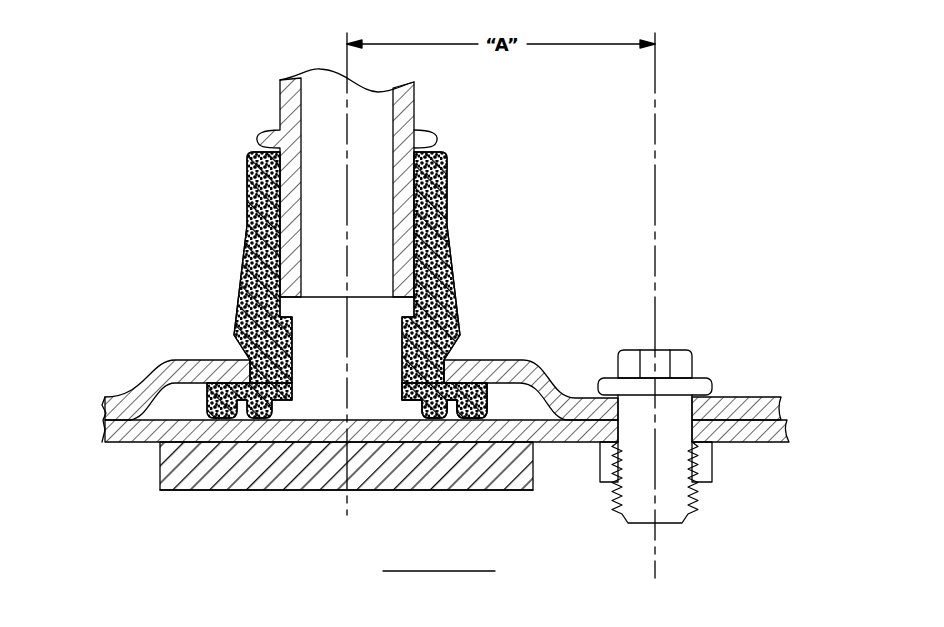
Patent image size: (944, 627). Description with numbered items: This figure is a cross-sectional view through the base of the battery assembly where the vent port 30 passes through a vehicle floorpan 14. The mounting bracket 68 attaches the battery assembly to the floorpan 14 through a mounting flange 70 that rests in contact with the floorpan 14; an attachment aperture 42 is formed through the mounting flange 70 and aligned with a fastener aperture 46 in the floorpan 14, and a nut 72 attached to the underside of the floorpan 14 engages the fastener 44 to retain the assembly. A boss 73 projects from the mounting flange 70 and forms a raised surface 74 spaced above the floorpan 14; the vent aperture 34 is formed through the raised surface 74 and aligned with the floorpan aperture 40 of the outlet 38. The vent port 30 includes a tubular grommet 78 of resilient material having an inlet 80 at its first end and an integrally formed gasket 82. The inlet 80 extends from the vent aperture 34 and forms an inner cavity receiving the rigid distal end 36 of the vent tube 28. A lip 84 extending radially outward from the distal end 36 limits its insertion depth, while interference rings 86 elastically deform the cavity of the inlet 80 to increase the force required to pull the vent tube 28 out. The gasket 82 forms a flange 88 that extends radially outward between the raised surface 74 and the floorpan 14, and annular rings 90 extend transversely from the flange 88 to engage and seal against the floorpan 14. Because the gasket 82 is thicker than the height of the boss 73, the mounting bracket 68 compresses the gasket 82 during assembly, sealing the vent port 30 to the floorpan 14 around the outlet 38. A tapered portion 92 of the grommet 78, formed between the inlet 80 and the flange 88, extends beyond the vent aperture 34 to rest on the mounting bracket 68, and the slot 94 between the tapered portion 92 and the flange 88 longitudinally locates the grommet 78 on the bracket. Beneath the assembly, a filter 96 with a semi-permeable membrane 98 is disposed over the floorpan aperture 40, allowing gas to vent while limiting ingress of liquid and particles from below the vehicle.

The floorpan 14 is at (788, 430).
The vent tube 28 is at (278, 115).
The vent port 30 is at (150, 182).
The vent aperture 34 is at (458, 325).
The distal end 36 is at (280, 90).
The outlet 38 is at (150, 473).
The floorpan aperture 40 is at (297, 430).
The attachment aperture 42 is at (690, 396).
The fastener 44 is at (667, 350).
The fastener aperture 46 is at (757, 440).
The mounting bracket 68 is at (515, 357).
The mounting flange 70 is at (757, 397).
The nut 72 is at (705, 454).
The boss 73 is at (540, 357).
The raised surface 74 is at (478, 357).
The grommet 78 is at (248, 172).
The inlet 80 is at (247, 192).
The gasket 82 is at (213, 392).
The lip 84 is at (430, 130).
The interference rings 86 is at (447, 203).
The flange 88 is at (490, 403).
The annular rings 90 is at (220, 418).
The tapered portion 92 is at (233, 298).
The slot 94 is at (250, 372).
The filter 96 is at (246, 488).
The semi-permeable membrane 98 is at (297, 463).